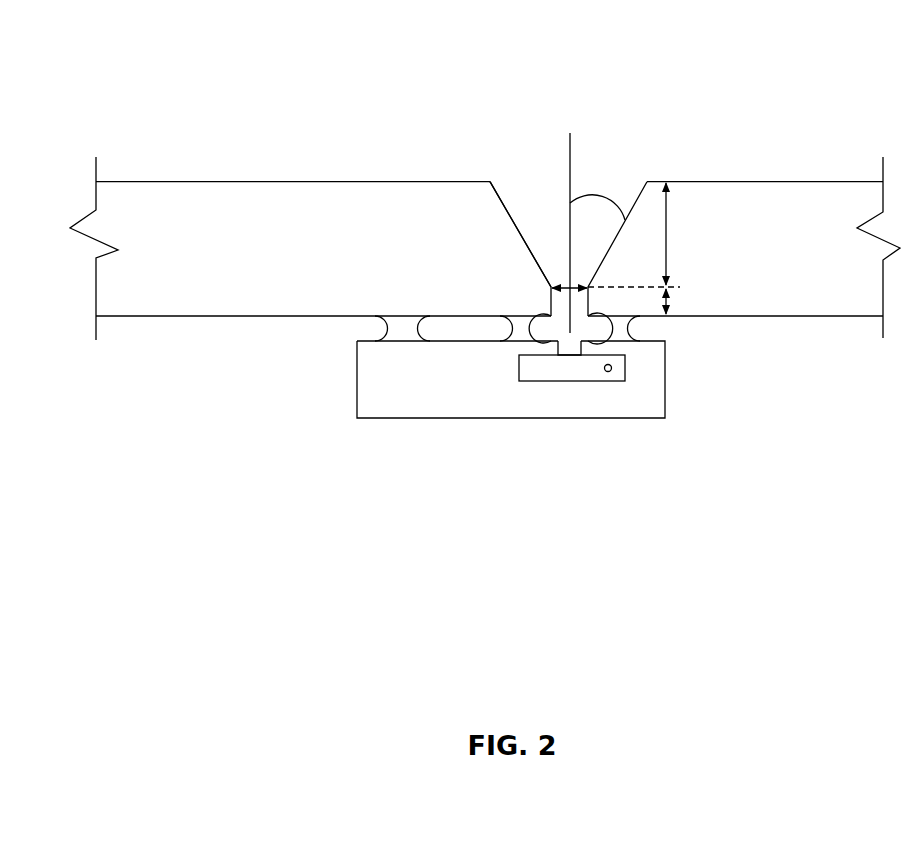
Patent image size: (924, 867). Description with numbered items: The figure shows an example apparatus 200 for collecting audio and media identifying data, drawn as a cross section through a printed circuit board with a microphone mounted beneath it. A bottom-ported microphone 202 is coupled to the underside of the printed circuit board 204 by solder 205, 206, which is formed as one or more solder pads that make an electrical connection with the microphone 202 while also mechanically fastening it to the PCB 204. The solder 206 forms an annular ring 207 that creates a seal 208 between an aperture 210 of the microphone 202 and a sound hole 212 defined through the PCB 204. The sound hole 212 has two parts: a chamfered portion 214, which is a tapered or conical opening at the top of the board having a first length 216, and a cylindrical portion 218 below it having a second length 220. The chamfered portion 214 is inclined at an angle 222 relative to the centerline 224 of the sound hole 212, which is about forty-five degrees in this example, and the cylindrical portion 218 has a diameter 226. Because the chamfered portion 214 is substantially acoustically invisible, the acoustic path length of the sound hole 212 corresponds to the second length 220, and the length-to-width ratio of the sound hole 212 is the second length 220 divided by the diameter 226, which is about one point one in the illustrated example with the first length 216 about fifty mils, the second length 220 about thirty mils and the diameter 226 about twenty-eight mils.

The apparatus 200 is at (396, 86).
The bottom-ported microphone 202 is at (339, 403).
The printed circuit board 204 is at (186, 193).
The solder 205 is at (395, 322).
The solder 206 is at (514, 340).
The annular ring 207 is at (341, 327).
The seal 208 is at (642, 325).
The aperture 210 is at (570, 356).
The sound hole 212 is at (531, 186).
The chamfered portion 214 is at (504, 208).
The first length 216 is at (667, 233).
The cylindrical portion 218 is at (549, 289).
The second length 220 is at (670, 299).
The angle 222 is at (592, 196).
The centerline 224 is at (571, 133).
The diameter 226 is at (582, 285).